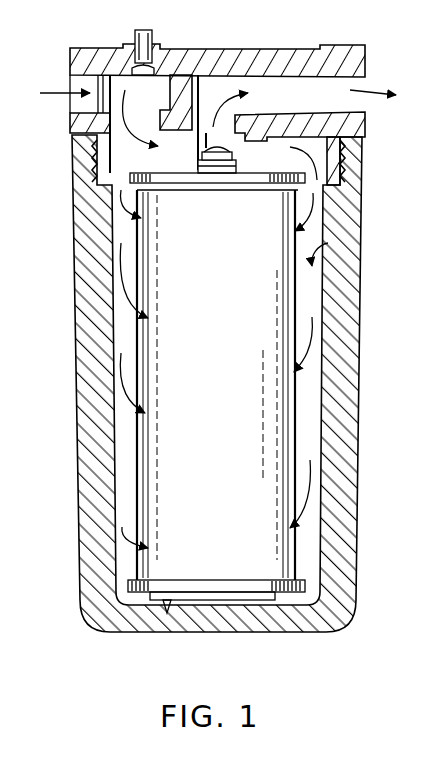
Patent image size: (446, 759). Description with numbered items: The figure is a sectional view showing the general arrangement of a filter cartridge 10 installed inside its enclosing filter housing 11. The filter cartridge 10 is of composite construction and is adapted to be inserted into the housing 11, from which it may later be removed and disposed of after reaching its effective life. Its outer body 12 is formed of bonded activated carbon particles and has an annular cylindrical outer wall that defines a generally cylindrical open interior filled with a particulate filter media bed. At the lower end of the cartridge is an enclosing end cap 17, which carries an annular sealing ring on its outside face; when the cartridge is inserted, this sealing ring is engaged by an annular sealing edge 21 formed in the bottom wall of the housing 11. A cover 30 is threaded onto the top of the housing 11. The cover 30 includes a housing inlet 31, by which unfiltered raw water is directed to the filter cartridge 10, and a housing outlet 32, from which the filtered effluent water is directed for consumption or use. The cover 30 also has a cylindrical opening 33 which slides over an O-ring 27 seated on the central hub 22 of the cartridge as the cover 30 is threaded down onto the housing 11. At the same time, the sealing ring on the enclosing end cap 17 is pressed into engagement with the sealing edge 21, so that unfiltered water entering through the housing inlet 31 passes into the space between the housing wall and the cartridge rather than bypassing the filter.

The filter cartridge 10 is at (330, 243).
The filter housing 11 is at (343, 305).
The outer body 12 is at (259, 457).
The enclosing end cap 17 is at (237, 593).
The annular sealing edge 21 is at (168, 608).
The central hub 22 is at (211, 148).
The O-ring 27 is at (198, 163).
The cover 30 is at (243, 57).
The housing inlet 31 is at (70, 100).
The housing outlet 32 is at (366, 80).
The cylindrical opening 33 is at (242, 99).